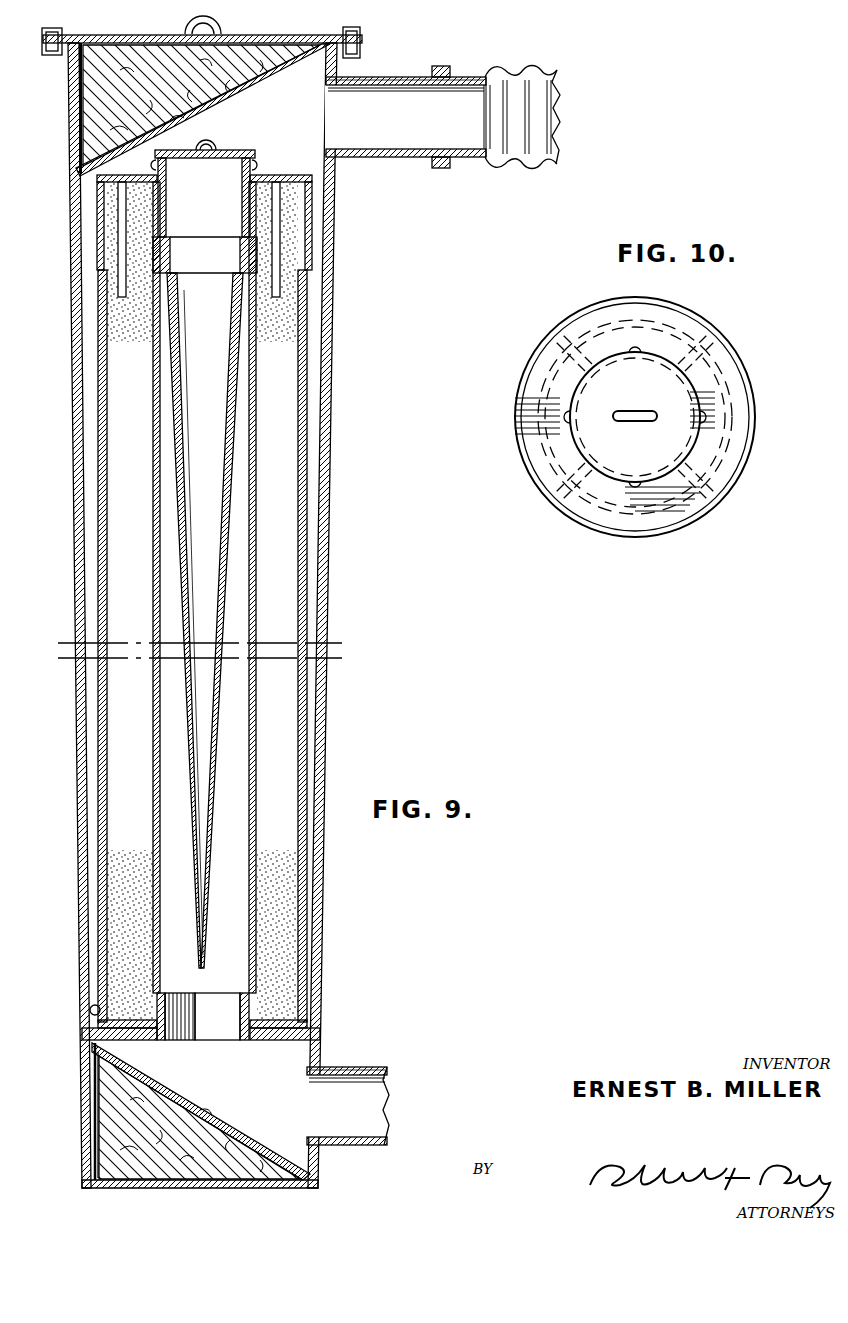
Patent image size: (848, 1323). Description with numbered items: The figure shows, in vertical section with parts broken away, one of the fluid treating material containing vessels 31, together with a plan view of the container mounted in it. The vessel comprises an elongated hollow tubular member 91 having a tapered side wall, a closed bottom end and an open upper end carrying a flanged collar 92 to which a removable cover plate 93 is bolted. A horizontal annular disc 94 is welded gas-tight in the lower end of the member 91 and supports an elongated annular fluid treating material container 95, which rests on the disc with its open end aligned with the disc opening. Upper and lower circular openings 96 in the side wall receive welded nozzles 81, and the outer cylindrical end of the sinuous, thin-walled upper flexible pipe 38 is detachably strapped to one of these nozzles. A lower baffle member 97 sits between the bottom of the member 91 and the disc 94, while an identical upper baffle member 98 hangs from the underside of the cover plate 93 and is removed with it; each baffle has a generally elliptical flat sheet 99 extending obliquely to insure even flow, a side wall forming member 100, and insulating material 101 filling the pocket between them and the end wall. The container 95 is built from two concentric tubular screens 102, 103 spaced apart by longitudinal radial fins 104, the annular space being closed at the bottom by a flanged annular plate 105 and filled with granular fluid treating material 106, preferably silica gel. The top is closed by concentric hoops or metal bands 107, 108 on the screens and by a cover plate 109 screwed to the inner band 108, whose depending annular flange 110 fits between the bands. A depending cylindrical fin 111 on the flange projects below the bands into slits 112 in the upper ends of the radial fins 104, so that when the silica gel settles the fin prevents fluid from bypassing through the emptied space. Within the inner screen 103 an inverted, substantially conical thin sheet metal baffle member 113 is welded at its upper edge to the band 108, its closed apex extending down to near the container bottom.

In FIG. 9, the fluid treating material containing vessel 31 is at (350, 516).
In FIG. 9, the upper flexible pipe 38 is at (535, 166).
In FIG. 9, the nozzle 81 is at (362, 158).
In FIG. 9, the elongated hollow tubular member 91 is at (329, 568).
In FIG. 9, the flanged collar 92 is at (347, 60).
In FIG. 9, the removable cover plate 93 is at (253, 36).
In FIG. 9, the annular disc 94 is at (283, 1044).
In FIG. 9, the annular fluid treating material container 95 is at (309, 410).
In FIG. 9, the circular opening 96 is at (327, 90).
In FIG. 9, the lower baffle member 97 is at (207, 1106).
In FIG. 9, the upper baffle member 98 is at (250, 98).
In FIG. 9, the elliptical-shaped flat sheet 99 is at (226, 98).
In FIG. 9, the side wall forming member 100 is at (82, 118).
In FIG. 9, the insulating material 101 is at (105, 92).
In FIG. 9, the outer tubular screen 102 is at (110, 540).
In FIG. 9, the inner tubular screen 103 is at (152, 592).
In FIG. 10, the longitudinal radial fin 104 is at (736, 355).
In FIG. 9, the flanged annular plate 105 is at (92, 1012).
In FIG. 9, the granular fluid treating material 106 is at (285, 940).
In FIG. 9, the outer hoop or metal band 107 is at (312, 214).
In FIG. 10, the outer hoop or metal band 107 is at (752, 456).
In FIG. 9, the inner hoop or metal band 108 is at (170, 225).
In FIG. 9, the cover plate 109 is at (256, 152).
In FIG. 10, the cover plate 109 is at (655, 452).
In FIG. 9, the depending annular flange 110 is at (272, 176).
In FIG. 9, the depending cylindrical fin 111 is at (270, 250).
In FIG. 10, the depending cylindrical fin 111 is at (730, 414).
In FIG. 10, the slit 112 is at (545, 488).
In FIG. 9, the inverted conically shaped baffle member 113 is at (224, 774).